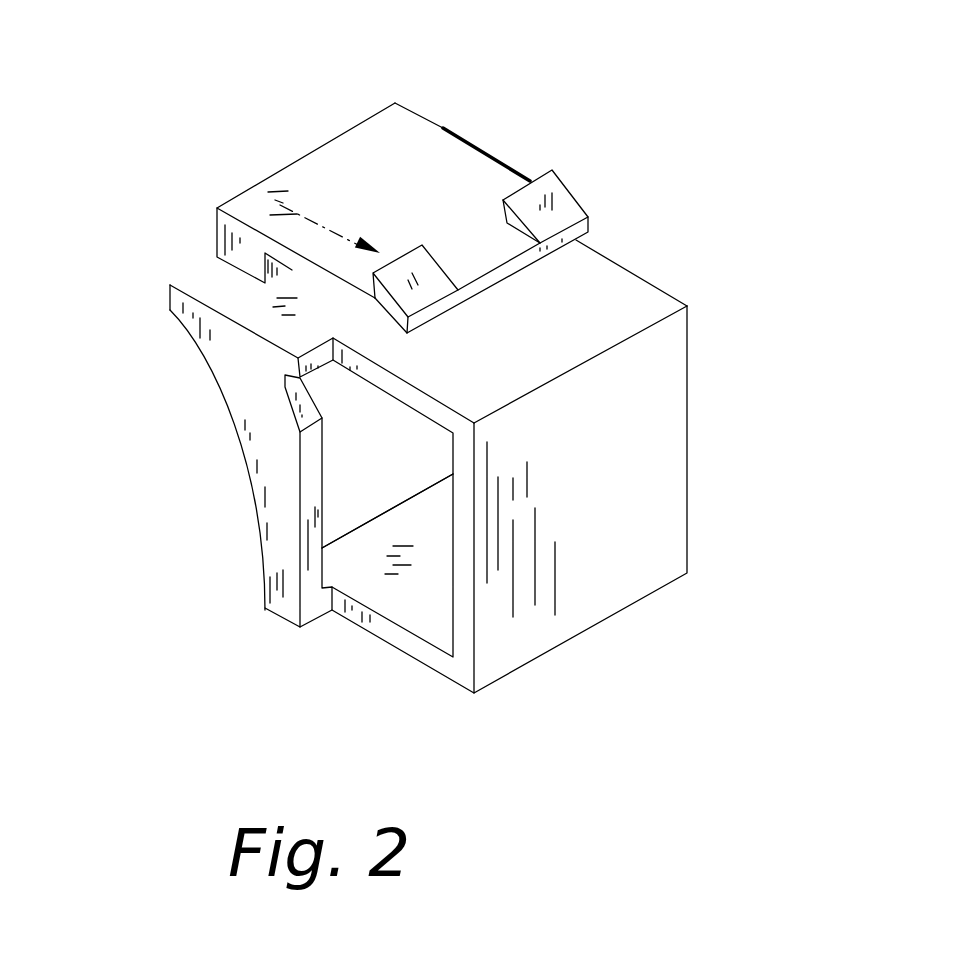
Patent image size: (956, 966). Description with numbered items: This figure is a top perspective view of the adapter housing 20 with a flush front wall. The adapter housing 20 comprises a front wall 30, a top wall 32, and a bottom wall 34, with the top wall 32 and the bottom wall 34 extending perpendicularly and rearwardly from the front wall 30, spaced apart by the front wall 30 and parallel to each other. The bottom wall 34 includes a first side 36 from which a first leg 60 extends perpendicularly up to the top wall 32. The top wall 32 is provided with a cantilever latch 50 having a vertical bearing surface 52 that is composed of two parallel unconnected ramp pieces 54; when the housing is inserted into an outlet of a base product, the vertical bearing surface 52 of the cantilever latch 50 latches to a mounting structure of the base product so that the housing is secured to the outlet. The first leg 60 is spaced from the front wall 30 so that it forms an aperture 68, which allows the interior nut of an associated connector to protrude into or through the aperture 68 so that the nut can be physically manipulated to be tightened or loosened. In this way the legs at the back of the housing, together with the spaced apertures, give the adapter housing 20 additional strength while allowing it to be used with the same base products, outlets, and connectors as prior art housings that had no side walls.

The adapter housing 20 is at (600, 100).
The front wall 30 is at (655, 410).
The top wall 32 is at (610, 293).
The bottom wall 34 is at (435, 617).
The first side 36 is at (377, 618).
The cantilever latch 50 is at (398, 172).
The vertical bearing surface 52 is at (273, 202).
The ramp pieces 54 is at (555, 193).
The first leg 60 is at (248, 390).
The aperture 68 is at (334, 528).